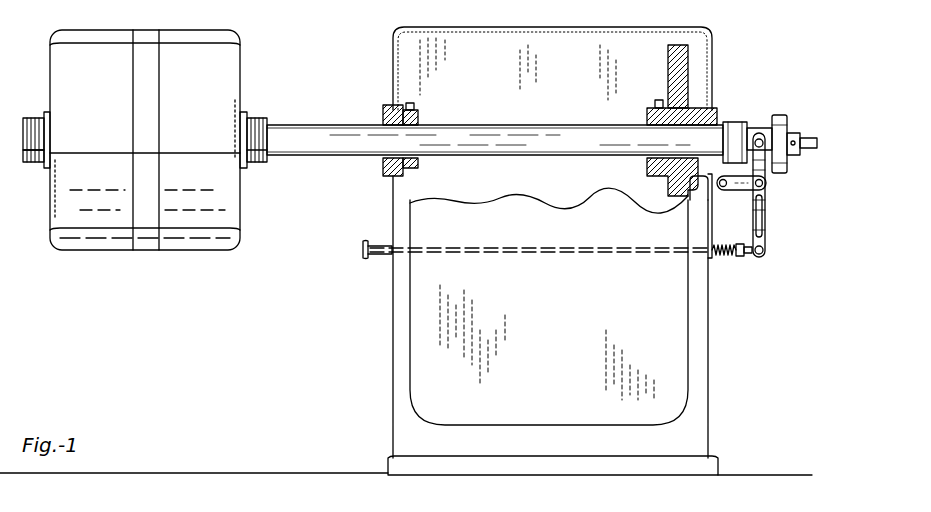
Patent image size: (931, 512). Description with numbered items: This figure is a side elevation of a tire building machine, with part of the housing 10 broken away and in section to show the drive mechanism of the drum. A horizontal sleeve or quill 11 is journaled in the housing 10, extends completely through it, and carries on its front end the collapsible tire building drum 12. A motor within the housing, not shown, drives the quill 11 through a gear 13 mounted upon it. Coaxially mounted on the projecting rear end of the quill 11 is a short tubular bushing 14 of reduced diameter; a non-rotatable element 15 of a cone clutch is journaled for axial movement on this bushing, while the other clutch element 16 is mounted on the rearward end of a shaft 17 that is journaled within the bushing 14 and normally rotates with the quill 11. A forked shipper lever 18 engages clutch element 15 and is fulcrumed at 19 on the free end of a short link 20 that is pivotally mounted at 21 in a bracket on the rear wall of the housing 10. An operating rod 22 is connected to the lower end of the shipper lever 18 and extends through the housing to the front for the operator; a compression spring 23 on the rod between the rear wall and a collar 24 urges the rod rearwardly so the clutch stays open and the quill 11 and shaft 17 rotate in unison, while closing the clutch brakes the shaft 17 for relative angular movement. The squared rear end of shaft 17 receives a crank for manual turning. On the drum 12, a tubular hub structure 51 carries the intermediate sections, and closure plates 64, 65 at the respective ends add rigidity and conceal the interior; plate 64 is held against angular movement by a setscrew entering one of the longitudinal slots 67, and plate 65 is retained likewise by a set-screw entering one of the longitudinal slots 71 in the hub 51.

The housing 10 is at (390, 330).
The sleeve or quill 11 is at (526, 125).
The collapsible tire building drum 12 is at (241, 80).
The gear 13 is at (668, 68).
The tubular bushing 14 is at (740, 122).
The non-rotatable clutch element 15 is at (780, 115).
The clutch element 16 is at (790, 156).
The shaft 17 is at (805, 137).
The forked shipper lever 18 is at (766, 222).
The fulcrum 19 is at (752, 200).
The short link 20 is at (719, 190).
The pivot 21 is at (714, 192).
The operating rod 22 is at (668, 254).
The compression spring 23 is at (722, 262).
The collar 24 is at (742, 258).
The hub structure 51 is at (30, 118).
The closure plate 64 is at (247, 112).
The closure plate 65 is at (48, 112).
The longitudinal slots 67 is at (270, 163).
The longitudinal slots 71 is at (28, 163).